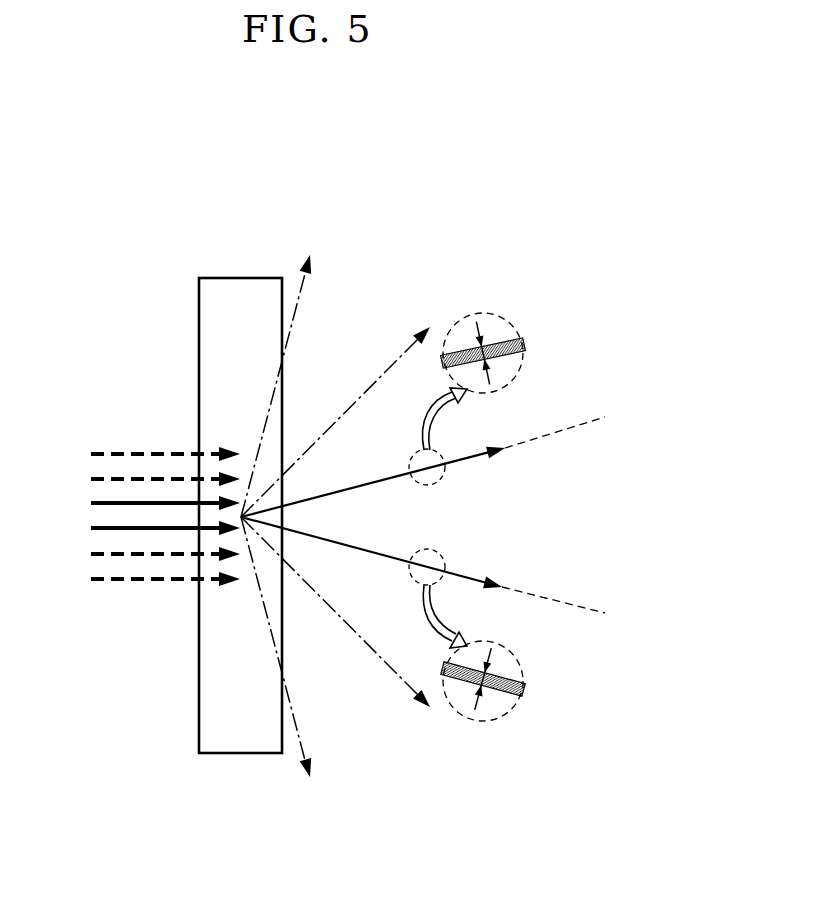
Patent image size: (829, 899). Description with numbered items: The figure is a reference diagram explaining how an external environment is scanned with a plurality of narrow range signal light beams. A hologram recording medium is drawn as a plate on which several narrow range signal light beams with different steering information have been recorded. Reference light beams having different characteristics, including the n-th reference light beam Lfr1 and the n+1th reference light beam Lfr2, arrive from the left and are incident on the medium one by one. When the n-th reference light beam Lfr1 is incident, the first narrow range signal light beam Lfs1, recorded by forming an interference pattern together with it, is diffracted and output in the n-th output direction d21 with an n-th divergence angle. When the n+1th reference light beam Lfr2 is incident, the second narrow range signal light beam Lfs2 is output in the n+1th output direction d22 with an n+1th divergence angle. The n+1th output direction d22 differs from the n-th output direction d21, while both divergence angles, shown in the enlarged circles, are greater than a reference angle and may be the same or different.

The n-th reference light beam Lfr1 is at (141, 528).
The n+1th reference light beam Lfr2 is at (141, 500).
The first narrow range signal light beam Lfs1 is at (372, 550).
The second narrow range signal light beam Lfs2 is at (462, 457).
The n-th output direction d21 is at (575, 608).
The n+1th output direction d22 is at (577, 427).